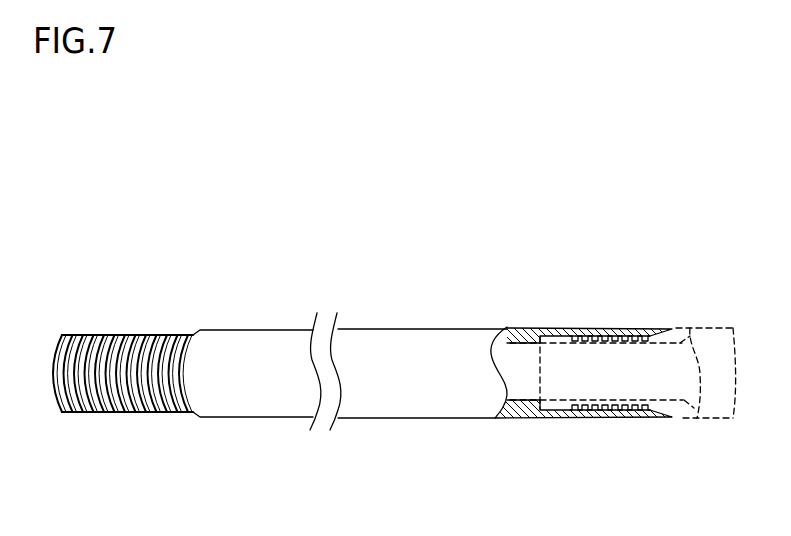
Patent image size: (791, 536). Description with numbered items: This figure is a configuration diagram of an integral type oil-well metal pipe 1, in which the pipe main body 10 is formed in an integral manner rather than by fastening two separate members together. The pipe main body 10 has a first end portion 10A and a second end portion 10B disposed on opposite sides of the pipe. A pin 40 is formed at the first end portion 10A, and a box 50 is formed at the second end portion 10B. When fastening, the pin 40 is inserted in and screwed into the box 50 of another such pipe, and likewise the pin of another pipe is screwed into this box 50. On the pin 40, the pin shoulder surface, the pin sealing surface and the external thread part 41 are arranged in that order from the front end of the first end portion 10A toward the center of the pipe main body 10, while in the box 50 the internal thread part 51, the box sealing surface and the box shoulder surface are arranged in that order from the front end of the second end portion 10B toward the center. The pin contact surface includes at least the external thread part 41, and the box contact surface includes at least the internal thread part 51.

The integral type oil-well metal pipe 1 is at (384, 99).
The pipe main body 10 is at (68, 212).
The first end portion 10A is at (124, 324).
The second end portion 10B is at (614, 296).
The pin 40 is at (99, 419).
The external thread part 41 is at (134, 413).
The box 50 is at (600, 430).
The internal thread part 51 is at (612, 406).